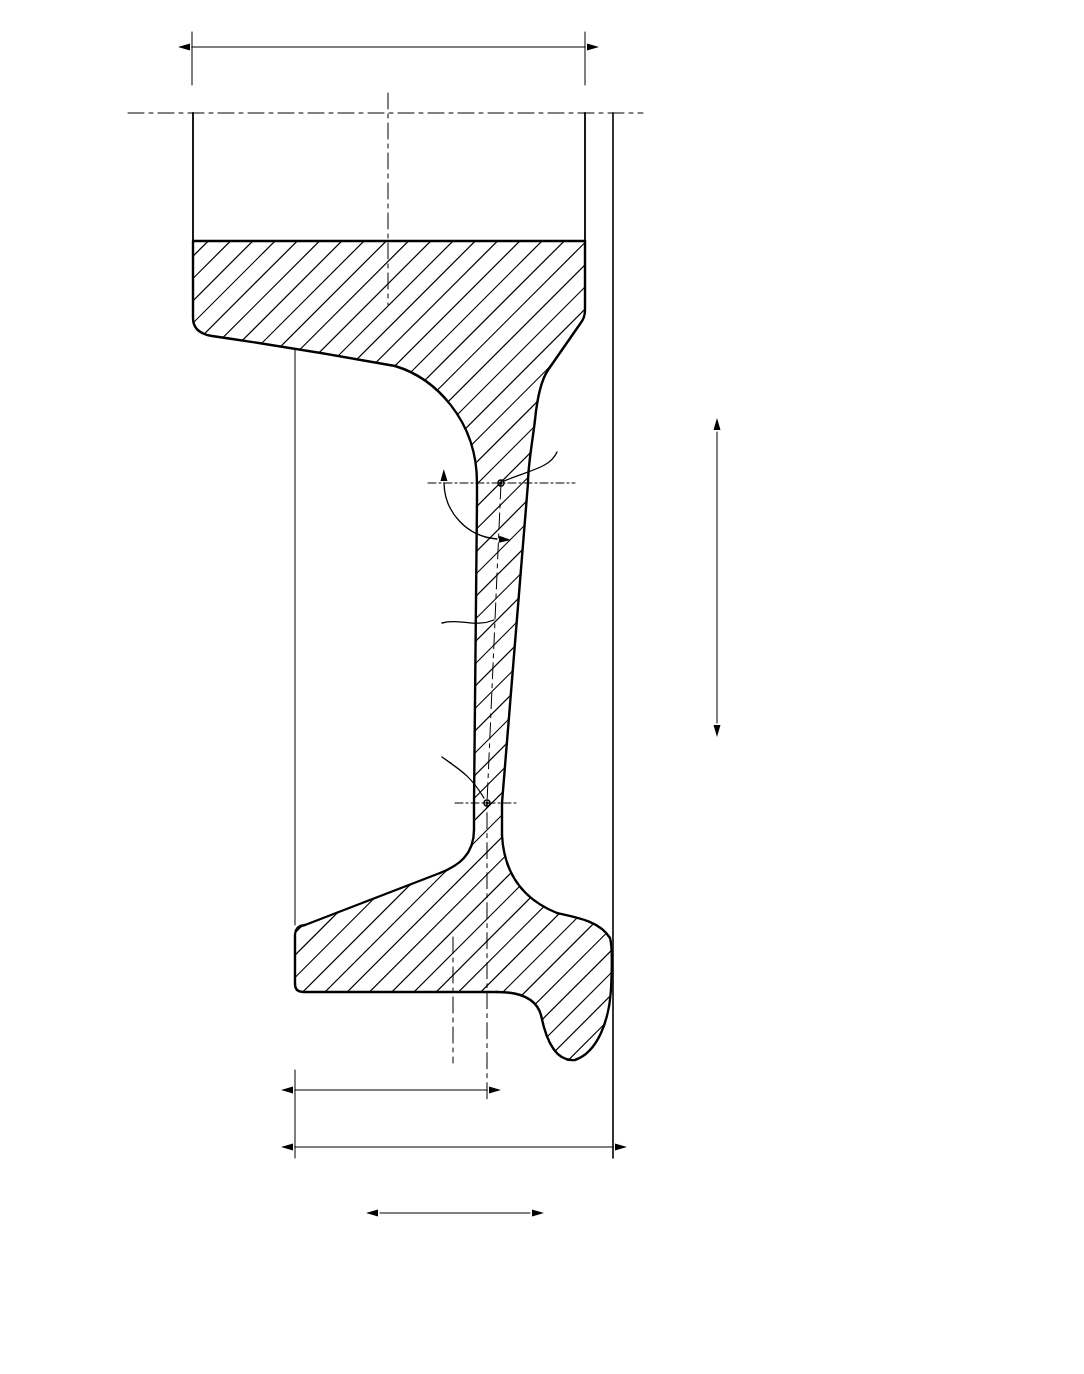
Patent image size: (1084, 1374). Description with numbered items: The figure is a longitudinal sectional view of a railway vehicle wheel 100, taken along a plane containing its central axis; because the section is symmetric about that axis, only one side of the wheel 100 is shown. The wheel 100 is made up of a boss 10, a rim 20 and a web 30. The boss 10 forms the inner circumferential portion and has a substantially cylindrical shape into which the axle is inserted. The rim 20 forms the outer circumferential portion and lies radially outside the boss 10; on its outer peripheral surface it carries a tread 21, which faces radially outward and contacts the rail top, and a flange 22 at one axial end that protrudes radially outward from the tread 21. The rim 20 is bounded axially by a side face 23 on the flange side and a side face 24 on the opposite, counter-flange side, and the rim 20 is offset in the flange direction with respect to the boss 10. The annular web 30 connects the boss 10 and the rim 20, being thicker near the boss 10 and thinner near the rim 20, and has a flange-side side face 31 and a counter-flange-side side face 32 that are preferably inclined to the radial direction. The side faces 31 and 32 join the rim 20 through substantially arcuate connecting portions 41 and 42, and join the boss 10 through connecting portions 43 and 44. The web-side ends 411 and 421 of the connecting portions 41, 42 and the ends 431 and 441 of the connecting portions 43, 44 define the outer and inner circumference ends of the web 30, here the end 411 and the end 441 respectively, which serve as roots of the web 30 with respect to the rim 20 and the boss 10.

The wheel 100 is at (696, 23).
The boss 10 is at (588, 272).
The rim 20 is at (605, 918).
The tread 21 is at (403, 993).
The flange 22 is at (576, 1063).
The side face 23 is at (614, 977).
The side face 24 is at (294, 955).
The web 30 is at (526, 600).
The side face 31 is at (510, 681).
The side face 32 is at (475, 681).
The connecting portion 41 is at (521, 888).
The end 411 is at (503, 798).
The connecting portion 42 is at (463, 846).
The end 421 is at (468, 822).
The connecting portion 43 is at (548, 385).
The end 431 is at (537, 421).
The connecting portion 44 is at (456, 412).
The end 441 is at (473, 474).